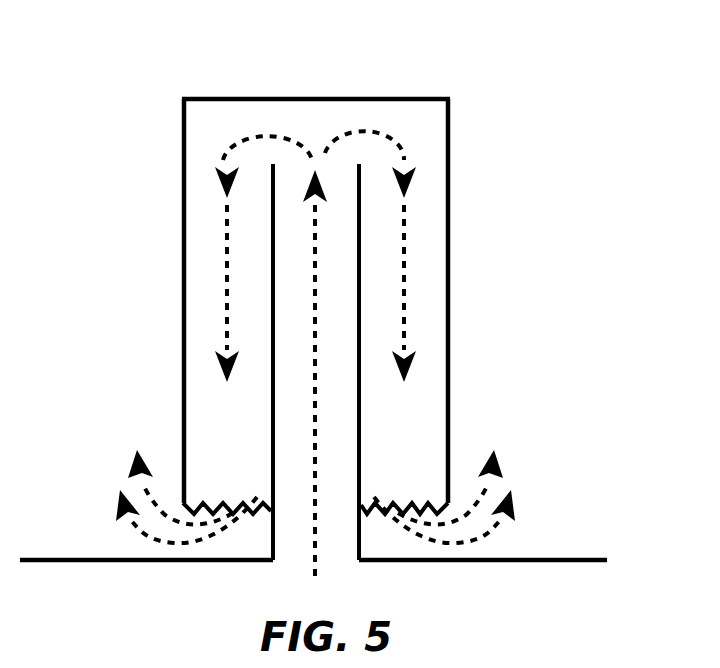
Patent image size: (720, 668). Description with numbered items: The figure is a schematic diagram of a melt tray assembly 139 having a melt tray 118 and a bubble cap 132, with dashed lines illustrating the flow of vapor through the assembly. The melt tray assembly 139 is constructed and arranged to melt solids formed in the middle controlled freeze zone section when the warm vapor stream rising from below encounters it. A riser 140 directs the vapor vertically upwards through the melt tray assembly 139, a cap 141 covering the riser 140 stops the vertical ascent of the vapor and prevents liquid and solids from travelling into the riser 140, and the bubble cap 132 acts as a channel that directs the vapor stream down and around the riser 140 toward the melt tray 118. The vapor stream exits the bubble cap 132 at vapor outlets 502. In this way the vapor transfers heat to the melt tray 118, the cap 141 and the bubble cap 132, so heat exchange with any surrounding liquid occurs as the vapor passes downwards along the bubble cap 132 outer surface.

The melt tray assembly 139 is at (152, 43).
The melt tray 118 is at (558, 558).
The bubble cap 132 is at (480, 202).
The cap 141 is at (408, 98).
The riser 140 is at (362, 402).
The vapor outlets 502 is at (223, 503).